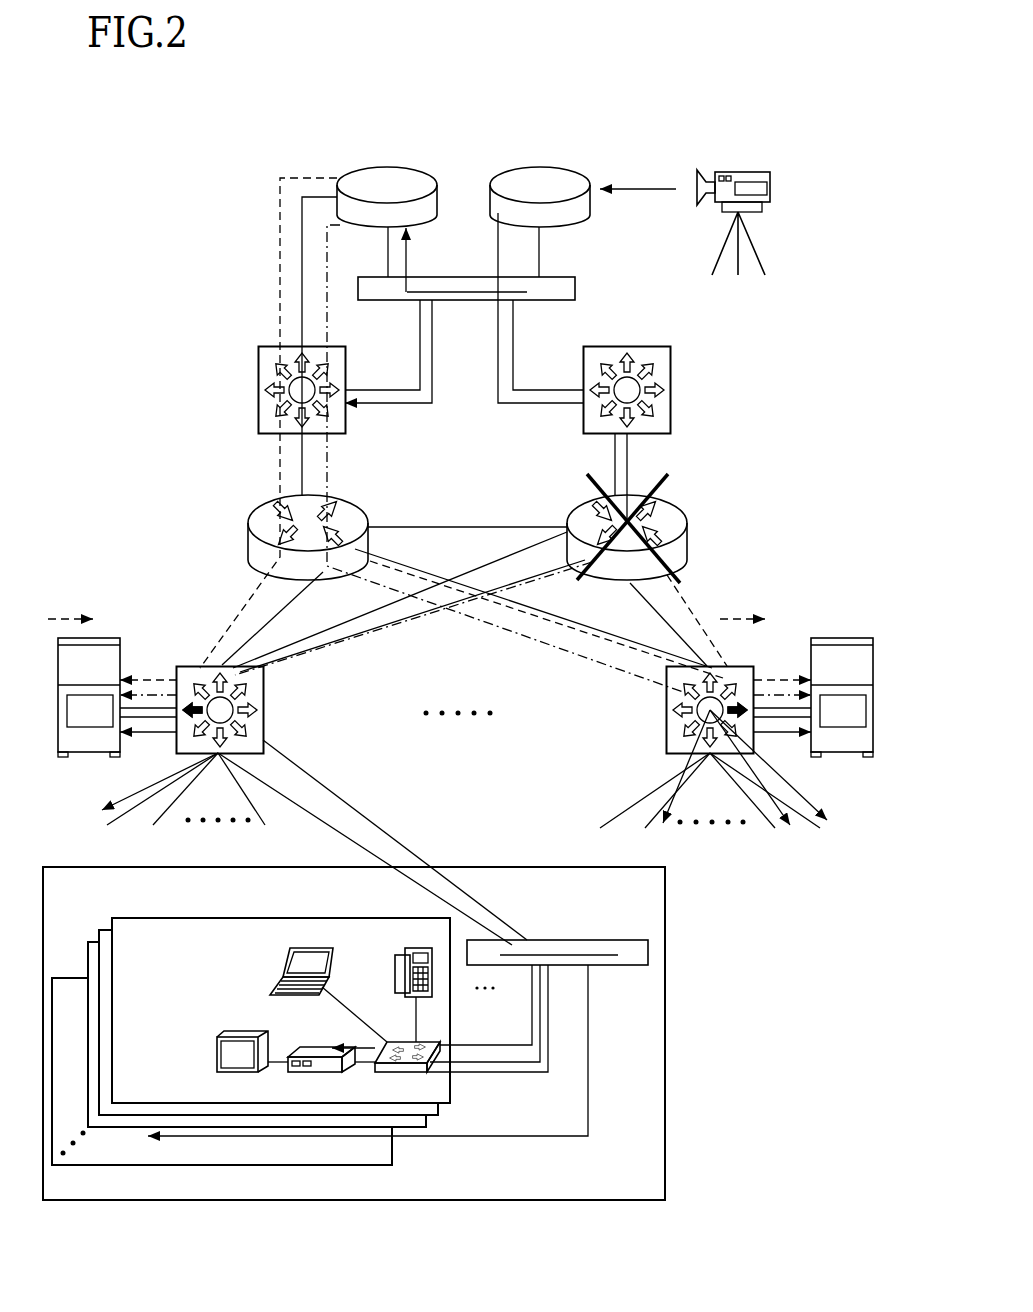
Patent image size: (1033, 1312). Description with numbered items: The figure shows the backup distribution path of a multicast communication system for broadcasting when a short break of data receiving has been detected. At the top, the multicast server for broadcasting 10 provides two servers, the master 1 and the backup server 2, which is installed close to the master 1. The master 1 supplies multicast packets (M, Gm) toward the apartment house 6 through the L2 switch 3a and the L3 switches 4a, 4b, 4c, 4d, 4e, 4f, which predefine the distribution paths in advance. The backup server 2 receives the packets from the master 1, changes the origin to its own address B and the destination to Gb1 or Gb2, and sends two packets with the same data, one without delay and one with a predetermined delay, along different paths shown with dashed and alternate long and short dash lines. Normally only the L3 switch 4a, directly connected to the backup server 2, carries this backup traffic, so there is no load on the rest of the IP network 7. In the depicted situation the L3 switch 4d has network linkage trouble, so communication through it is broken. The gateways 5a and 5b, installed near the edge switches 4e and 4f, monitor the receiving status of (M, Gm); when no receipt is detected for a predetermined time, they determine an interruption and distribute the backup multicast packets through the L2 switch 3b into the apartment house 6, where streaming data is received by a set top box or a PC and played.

The multicast server for broadcasting 10 is at (456, 152).
The master 1 is at (551, 164).
The backup server 2 is at (391, 164).
The L2 switch 3a is at (585, 293).
The L2 switch 3b is at (562, 940).
The L3 switch 4a is at (258, 368).
The L3 switch 4b is at (671, 371).
The L3 switch 4c is at (250, 518).
The L3 switch 4d is at (688, 541).
The L3 switch 4e is at (263, 716).
The L3 switch 4f is at (667, 705).
The gateway 5a is at (120, 652).
The gateway 5b is at (811, 660).
The apartment house 6 is at (666, 925).
The IP network 7 is at (645, 462).